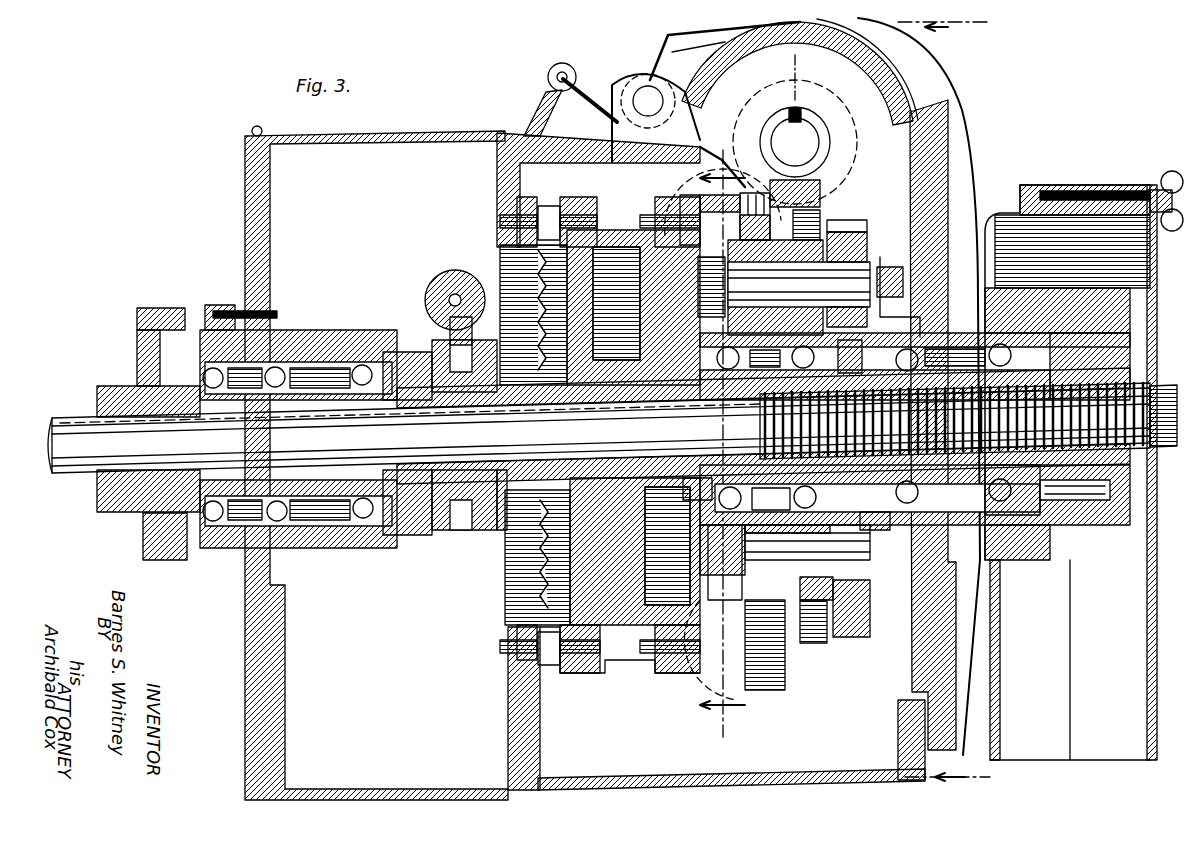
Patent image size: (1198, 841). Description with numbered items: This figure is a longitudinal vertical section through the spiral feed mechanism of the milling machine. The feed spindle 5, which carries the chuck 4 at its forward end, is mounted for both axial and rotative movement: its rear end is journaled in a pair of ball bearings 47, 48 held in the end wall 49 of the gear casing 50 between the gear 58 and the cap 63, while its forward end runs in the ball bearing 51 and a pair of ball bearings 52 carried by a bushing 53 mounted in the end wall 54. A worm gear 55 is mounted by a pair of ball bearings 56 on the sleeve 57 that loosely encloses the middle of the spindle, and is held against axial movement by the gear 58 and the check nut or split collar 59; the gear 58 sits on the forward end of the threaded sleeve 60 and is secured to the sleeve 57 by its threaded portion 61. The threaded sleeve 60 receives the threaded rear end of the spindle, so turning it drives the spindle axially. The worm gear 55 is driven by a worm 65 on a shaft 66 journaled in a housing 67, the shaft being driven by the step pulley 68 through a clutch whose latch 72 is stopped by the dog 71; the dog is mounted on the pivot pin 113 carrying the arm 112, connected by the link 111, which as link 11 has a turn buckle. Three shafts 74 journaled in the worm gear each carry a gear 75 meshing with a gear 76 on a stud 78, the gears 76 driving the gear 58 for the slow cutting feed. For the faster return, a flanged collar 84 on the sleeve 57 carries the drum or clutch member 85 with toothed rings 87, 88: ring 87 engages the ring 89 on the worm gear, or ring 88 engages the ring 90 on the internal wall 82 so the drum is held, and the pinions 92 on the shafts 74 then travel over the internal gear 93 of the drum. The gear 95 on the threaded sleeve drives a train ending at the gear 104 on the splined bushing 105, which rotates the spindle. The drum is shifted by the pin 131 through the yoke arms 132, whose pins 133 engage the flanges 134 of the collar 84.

The chuck 4 is at (951, 403).
The feed spindle 5 is at (68, 430).
The link 11 is at (722, 444).
The ball bearing 47 is at (890, 352).
The ball bearing 48 is at (1040, 345).
The end wall 49 is at (948, 196).
The gear casing 50 is at (731, 708).
The ball bearing 51 is at (432, 362).
The pair of ball bearings 52 is at (228, 305).
The bushing 53 is at (322, 333).
The end wall 54 is at (252, 188).
The worm gear 55 is at (812, 188).
The pair of ball bearings 56 is at (771, 499).
The sleeve 57 is at (747, 394).
The gear 58 is at (864, 357).
The check nut or split collar 59 is at (692, 478).
The threaded sleeve 60 is at (1050, 515).
The threaded portion 61 is at (875, 511).
The cap 63 is at (1045, 318).
The worm 65 is at (838, 98).
The shaft 66 is at (812, 137).
The housing 67 is at (890, 70).
The step pulley 68 is at (952, 80).
The dog 71 is at (668, 200).
The latch 72 is at (740, 212).
The shaft 74 is at (868, 262).
The gear 75 is at (865, 230).
The gear 76 is at (855, 620).
The stud 78 is at (870, 545).
The internal wall 82 is at (518, 713).
The flanged collar 84 is at (500, 530).
The drum or clutch member 85 is at (633, 240).
The toothed ring 87 is at (668, 197).
The toothed ring 88 is at (562, 205).
The ring 89 is at (718, 182).
The ring 90 is at (530, 205).
The pinion 92 is at (799, 287).
The internal gear 93 is at (655, 541).
The gear 95 is at (1080, 505).
The gear 104 is at (157, 308).
The bushing 105 is at (97, 492).
The link 111 is at (546, 103).
The arm 112 is at (628, 118).
The pivot pin 113 is at (549, 75).
The pin 131 is at (444, 277).
The arms 132 is at (436, 345).
The pins 133 is at (410, 424).
The flanges 134 is at (452, 532).